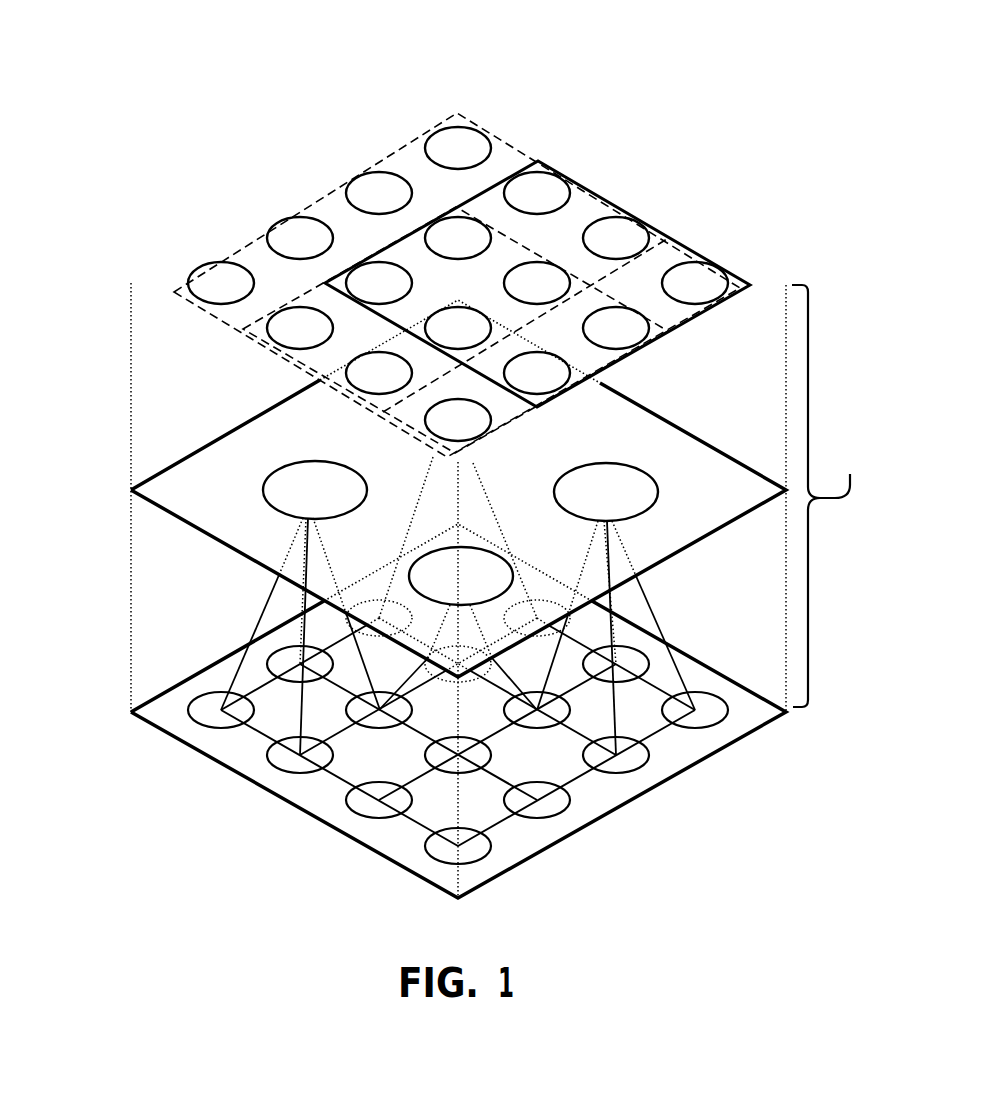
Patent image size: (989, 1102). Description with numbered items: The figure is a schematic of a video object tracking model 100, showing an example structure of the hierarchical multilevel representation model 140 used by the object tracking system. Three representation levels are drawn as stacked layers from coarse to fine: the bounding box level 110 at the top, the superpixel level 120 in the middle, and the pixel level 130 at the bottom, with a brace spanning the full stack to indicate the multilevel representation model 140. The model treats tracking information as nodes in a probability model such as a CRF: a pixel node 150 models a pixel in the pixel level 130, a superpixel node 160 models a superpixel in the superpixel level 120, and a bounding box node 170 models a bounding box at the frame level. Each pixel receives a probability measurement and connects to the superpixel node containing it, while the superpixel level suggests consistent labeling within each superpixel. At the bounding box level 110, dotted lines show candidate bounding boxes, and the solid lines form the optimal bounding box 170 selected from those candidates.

The video object tracking model 100 is at (199, 111).
The bounding box level 110 is at (122, 276).
The superpixel level 120 is at (122, 467).
The pixel level 130 is at (122, 705).
The multilevel representation model 140 is at (824, 498).
The pixel node 150 is at (568, 808).
The superpixel node 160 is at (658, 502).
The bounding box node 170 is at (700, 257).